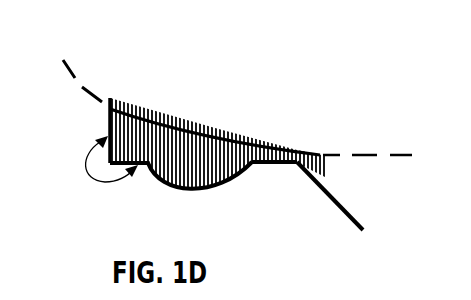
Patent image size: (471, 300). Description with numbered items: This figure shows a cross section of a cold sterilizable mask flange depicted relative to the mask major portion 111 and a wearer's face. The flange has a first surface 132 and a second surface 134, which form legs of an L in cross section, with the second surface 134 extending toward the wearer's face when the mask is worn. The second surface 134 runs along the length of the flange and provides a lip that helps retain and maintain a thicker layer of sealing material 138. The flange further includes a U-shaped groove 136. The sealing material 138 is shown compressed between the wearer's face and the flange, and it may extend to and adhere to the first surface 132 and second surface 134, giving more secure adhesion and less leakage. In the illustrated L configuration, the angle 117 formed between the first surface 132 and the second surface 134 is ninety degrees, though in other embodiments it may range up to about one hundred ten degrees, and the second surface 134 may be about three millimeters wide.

The mask major portion 111 is at (347, 207).
The angle 117 is at (92, 180).
The first surface 132 is at (265, 163).
The second surface 134 is at (110, 127).
The groove 136 is at (202, 188).
The sealing material 138 is at (215, 134).